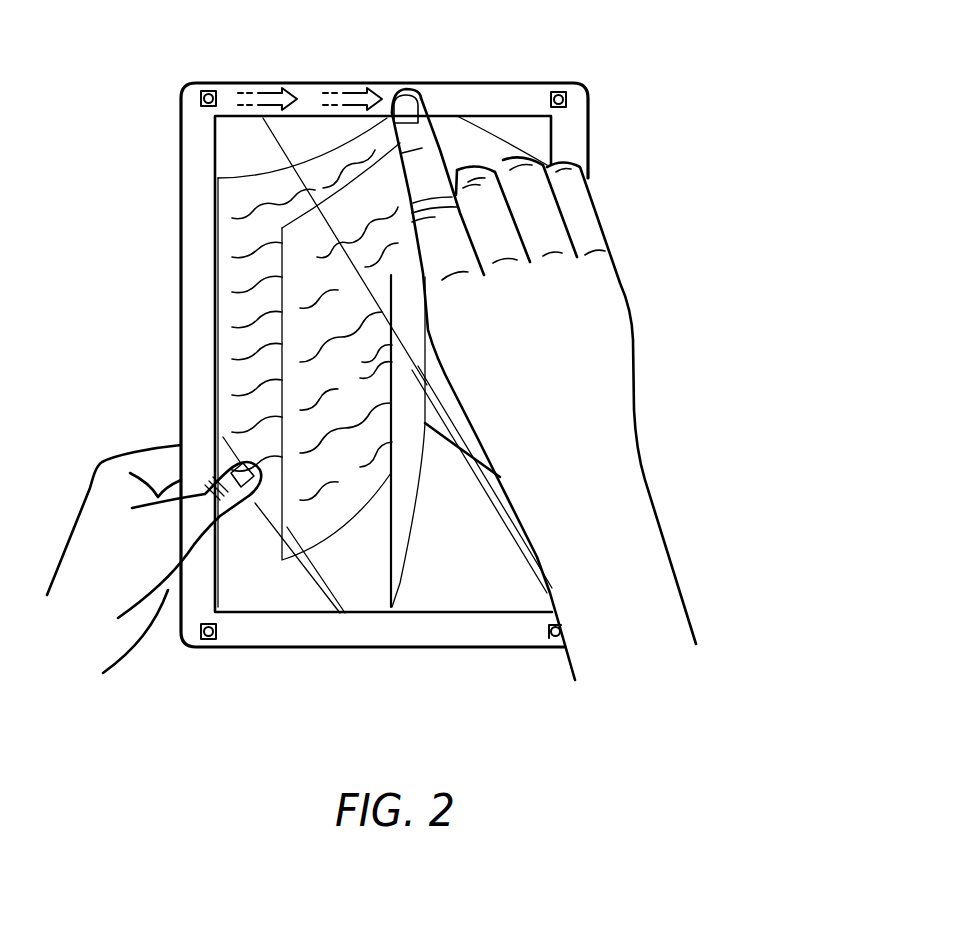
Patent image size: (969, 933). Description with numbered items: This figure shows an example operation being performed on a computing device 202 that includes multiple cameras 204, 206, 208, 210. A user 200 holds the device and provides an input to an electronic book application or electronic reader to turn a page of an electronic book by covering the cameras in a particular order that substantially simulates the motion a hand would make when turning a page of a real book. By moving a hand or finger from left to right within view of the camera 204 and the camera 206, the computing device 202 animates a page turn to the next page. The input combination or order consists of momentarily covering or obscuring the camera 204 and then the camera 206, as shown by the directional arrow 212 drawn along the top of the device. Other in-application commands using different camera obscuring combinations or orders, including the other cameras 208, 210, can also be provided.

The user 200 is at (633, 330).
The computing device 202 is at (181, 146).
The camera 204 is at (208, 91).
The camera 206 is at (558, 92).
The camera 208 is at (208, 645).
The camera 210 is at (552, 633).
The directional arrow 212 is at (268, 92).